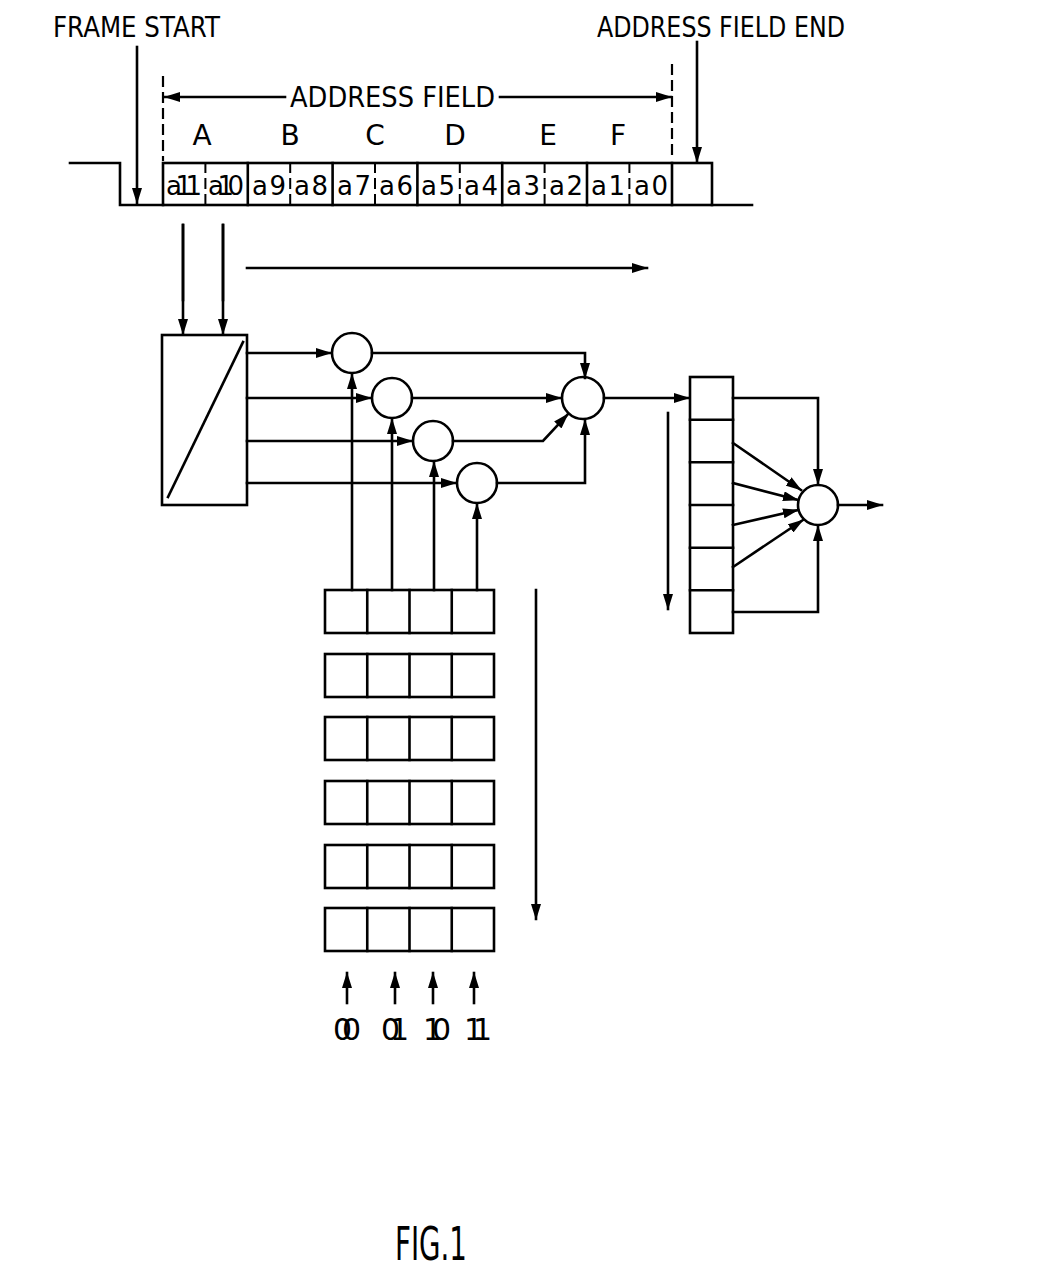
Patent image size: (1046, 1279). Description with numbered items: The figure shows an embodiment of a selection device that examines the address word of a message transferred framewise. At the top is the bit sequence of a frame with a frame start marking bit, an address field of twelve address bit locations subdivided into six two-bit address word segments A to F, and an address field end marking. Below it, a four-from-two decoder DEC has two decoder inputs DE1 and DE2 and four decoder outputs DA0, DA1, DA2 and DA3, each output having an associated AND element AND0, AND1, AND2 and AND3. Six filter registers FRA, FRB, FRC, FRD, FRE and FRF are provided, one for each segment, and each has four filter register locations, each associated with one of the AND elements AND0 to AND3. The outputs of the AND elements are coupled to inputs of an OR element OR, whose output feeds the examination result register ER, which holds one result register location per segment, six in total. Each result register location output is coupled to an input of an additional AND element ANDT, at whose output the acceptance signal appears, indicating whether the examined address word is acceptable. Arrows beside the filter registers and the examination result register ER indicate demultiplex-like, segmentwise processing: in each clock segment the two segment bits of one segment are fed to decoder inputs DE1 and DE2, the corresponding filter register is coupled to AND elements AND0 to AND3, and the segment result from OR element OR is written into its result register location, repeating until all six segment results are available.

The decoder input DE1 is at (148, 275).
The decoder input DE2 is at (251, 275).
The 4-from-2 decoder DEC is at (178, 506).
The decoder output DA0 is at (289, 338).
The decoder output DA1 is at (309, 380).
The decoder output DA2 is at (329, 422).
The decoder output DA3 is at (351, 464).
The AND element AND0 is at (458, 454).
The AND element AND1 is at (466, 476).
The AND element AND2 is at (490, 497).
The AND element AND3 is at (521, 505).
The OR element OR is at (625, 398).
The examination result register ER is at (734, 379).
The additional AND element ANDT is at (832, 490).
The filter register FRA is at (363, 611).
The filter register FRB is at (363, 675).
The filter register FRC is at (363, 738).
The filter register FRD is at (363, 802).
The filter register FRE is at (363, 866).
The filter register FRF is at (363, 929).